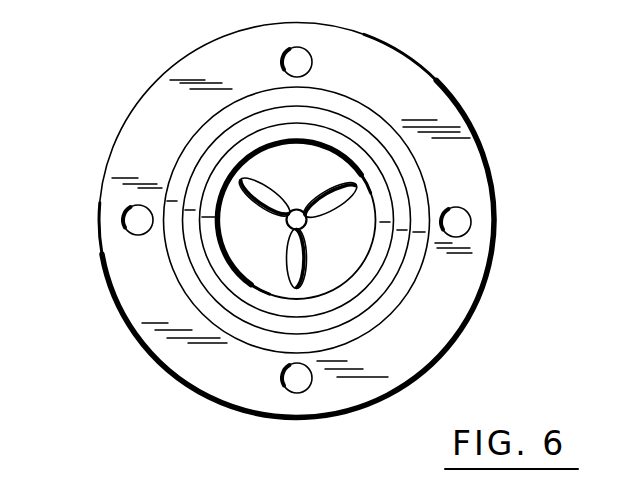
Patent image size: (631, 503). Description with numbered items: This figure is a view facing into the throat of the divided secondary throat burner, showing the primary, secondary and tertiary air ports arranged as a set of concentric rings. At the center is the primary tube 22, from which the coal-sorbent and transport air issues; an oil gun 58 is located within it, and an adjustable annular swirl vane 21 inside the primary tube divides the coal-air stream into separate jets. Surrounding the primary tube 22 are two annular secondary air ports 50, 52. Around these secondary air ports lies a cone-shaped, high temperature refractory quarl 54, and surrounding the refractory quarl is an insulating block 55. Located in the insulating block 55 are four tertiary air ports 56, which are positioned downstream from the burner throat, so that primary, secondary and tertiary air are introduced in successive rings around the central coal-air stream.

The adjustable annular swirl vane 21 is at (293, 257).
The primary tube 22 is at (345, 278).
The annular secondary air port 50 is at (324, 322).
The annular secondary air port 52 is at (265, 303).
The refractory quarl 54 is at (380, 307).
The insulating block 55 is at (443, 288).
The tertiary air ports 56 is at (310, 63).
The oil gun 58 is at (297, 210).